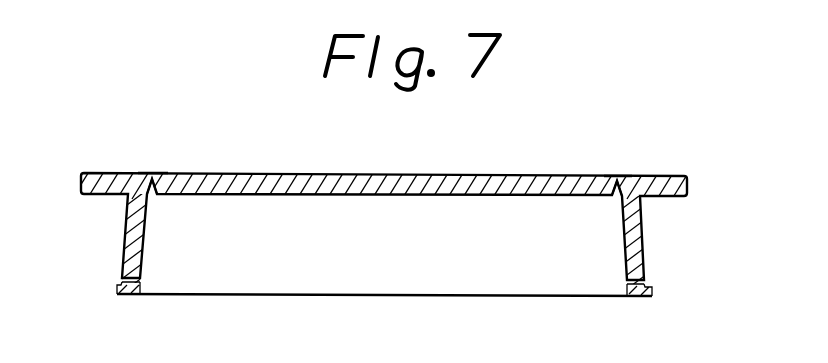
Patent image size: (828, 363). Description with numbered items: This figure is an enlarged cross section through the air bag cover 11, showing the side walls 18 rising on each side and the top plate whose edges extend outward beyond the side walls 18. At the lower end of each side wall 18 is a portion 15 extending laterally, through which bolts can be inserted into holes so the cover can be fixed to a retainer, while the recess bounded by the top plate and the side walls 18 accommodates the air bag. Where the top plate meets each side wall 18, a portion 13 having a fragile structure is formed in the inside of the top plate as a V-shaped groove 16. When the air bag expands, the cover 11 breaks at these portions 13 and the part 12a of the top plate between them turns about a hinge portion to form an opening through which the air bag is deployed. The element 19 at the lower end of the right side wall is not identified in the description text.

The tray assembly 11 is at (394, 199).
The top plate 12a is at (375, 173).
The joint between plate and side wall 13 is at (153, 173).
The left foot flange 15 is at (118, 285).
The V-shaped notch 16 is at (152, 196).
The right side wall 18 is at (643, 226).
The right foot flange 19 is at (648, 284).